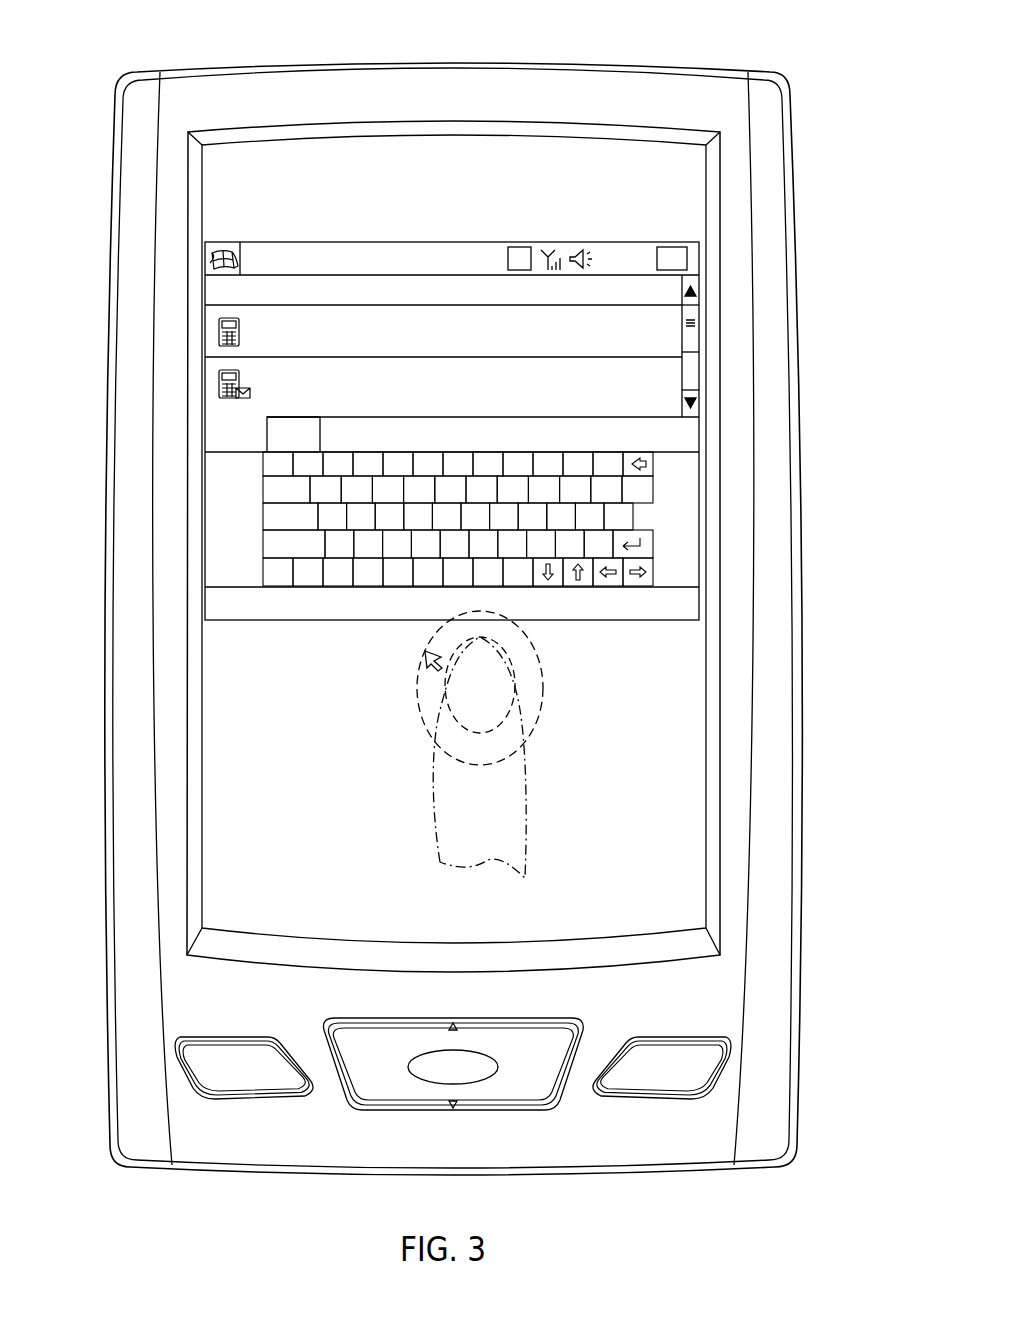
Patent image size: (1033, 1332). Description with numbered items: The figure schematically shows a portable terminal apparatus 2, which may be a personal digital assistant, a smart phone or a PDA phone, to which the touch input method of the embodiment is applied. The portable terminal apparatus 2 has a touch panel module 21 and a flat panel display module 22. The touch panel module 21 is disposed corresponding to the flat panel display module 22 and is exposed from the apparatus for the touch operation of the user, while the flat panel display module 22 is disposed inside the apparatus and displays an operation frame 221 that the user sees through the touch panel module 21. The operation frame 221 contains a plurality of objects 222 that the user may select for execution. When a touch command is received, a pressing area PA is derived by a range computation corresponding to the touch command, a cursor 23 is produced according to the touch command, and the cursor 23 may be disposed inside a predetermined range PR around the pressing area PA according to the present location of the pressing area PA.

The portable terminal apparatus 2 is at (91, 40).
The touch panel module 21 is at (226, 193).
The flat panel display module 22 is at (526, 460).
The operation frame 221 is at (672, 378).
The objects 222 is at (612, 580).
The cursor 23 is at (424, 661).
The pressing area PA is at (491, 669).
The predetermined range PR is at (537, 698).